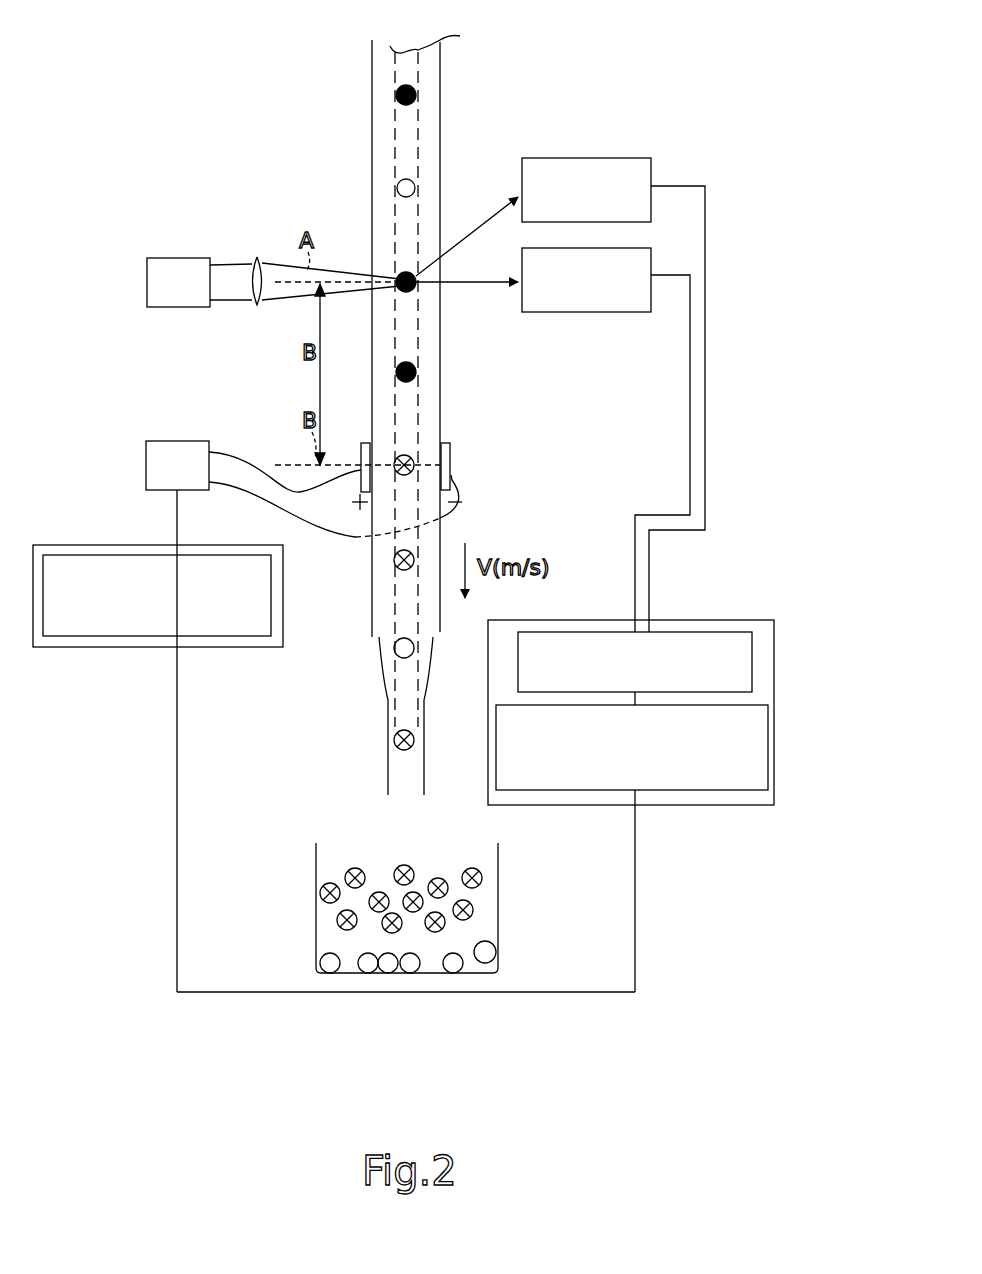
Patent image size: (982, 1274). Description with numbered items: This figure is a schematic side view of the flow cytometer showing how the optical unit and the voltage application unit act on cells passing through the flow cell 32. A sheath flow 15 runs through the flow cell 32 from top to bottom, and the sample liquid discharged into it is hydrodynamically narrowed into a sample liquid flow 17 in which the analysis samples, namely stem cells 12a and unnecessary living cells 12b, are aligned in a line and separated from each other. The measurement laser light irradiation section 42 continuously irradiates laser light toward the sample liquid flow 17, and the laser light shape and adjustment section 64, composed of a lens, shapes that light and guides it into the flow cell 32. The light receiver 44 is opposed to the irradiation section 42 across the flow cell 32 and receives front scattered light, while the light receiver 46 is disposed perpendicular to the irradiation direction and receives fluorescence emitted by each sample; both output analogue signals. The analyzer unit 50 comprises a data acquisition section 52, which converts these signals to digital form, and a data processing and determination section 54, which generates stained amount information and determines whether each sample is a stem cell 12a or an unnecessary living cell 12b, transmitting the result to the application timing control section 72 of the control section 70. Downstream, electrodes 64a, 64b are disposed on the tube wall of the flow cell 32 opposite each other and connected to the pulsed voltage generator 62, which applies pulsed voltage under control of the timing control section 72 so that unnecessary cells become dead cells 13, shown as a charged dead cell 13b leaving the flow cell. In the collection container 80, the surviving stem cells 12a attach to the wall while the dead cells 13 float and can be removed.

The stem cell 12a is at (414, 188).
The unnecessary living cell 12b is at (416, 92).
The dead cell 13 is at (412, 458).
The charged second particle 13b is at (414, 742).
The sheath flow 15 is at (426, 168).
The sample liquid flow 17 is at (414, 144).
The flow cell 32 is at (424, 352).
The measurement laser light irradiation section 42 is at (176, 258).
The light receiver 44 is at (651, 258).
The light receiver 46 is at (651, 162).
The analyzer unit 50 is at (706, 620).
The data acquisition section 52 is at (752, 662).
The data processing and determination section 54 is at (768, 748).
The pulsed voltage generator 62 is at (176, 441).
The laser light shape and adjustment section 64 is at (257, 307).
The electrode 64a is at (361, 450).
The electrode 64b is at (452, 458).
The control section 70 is at (62, 650).
The application timing control section 72 is at (271, 598).
The collection container 80 is at (498, 880).